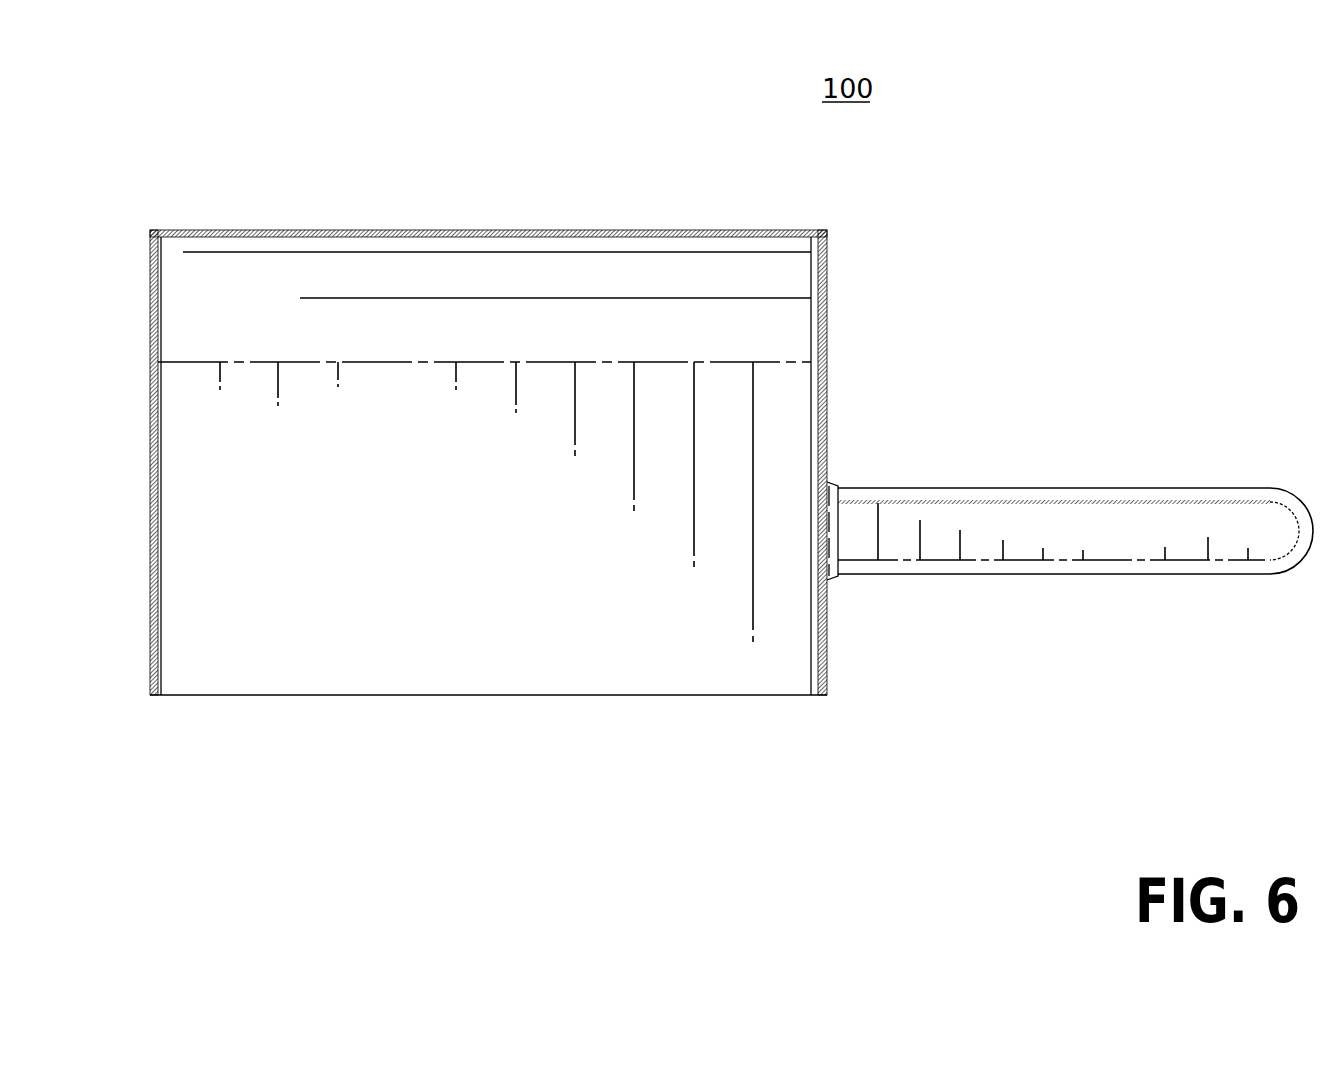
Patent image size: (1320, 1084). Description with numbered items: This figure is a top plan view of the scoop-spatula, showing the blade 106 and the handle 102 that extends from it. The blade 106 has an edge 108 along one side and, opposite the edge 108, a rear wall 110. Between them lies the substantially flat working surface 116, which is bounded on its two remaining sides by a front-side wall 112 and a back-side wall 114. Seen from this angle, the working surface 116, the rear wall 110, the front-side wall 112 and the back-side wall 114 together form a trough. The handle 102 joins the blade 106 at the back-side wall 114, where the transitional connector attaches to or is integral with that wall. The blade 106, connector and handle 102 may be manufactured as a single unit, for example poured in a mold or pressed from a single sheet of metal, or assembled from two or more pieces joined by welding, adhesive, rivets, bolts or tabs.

The handle 102 is at (1213, 576).
The blade 106 is at (428, 537).
The edge 108 is at (362, 698).
The rear wall 110 is at (453, 230).
The front-side wall 112 is at (151, 621).
The back-side wall 114 is at (828, 640).
The working surface 116 is at (585, 648).